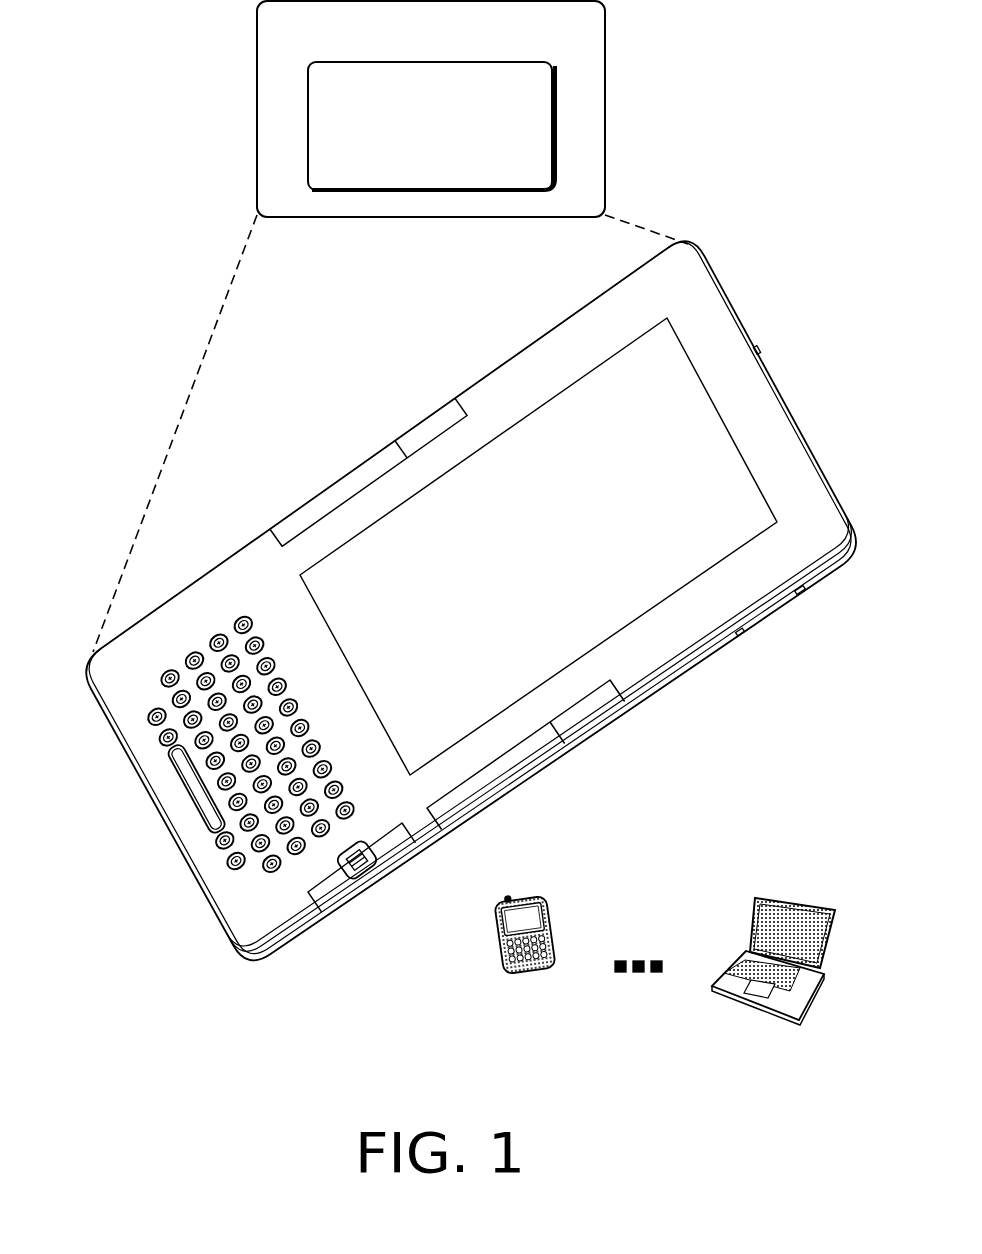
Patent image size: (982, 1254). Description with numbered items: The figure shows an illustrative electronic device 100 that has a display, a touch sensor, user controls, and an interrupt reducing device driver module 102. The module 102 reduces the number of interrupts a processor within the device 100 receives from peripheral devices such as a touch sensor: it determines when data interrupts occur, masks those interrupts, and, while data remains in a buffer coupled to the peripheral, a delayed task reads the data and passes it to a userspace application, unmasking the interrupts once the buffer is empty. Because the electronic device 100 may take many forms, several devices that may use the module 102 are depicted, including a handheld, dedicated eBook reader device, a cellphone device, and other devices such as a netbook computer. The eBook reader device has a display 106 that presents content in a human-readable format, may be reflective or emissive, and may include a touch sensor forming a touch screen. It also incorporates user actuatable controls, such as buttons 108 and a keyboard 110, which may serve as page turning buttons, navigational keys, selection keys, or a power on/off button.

The electronic device 100 is at (390, 326).
The interrupt reducing device driver module 102 is at (431, 126).
The display 106 is at (666, 363).
The buttons 108 is at (368, 472).
The keyboard 110 is at (237, 858).